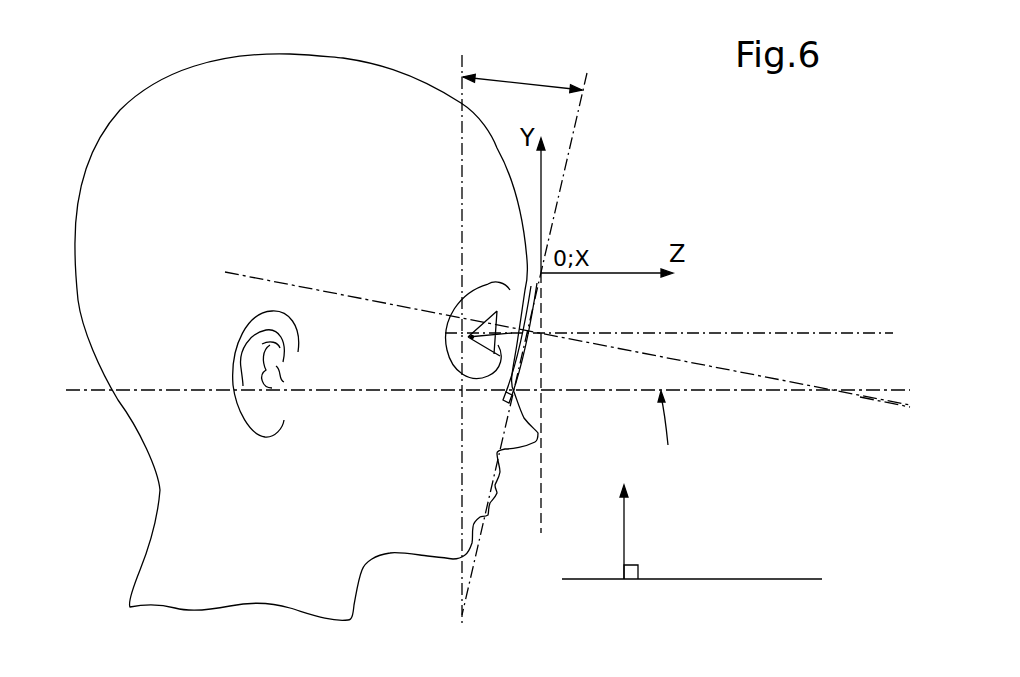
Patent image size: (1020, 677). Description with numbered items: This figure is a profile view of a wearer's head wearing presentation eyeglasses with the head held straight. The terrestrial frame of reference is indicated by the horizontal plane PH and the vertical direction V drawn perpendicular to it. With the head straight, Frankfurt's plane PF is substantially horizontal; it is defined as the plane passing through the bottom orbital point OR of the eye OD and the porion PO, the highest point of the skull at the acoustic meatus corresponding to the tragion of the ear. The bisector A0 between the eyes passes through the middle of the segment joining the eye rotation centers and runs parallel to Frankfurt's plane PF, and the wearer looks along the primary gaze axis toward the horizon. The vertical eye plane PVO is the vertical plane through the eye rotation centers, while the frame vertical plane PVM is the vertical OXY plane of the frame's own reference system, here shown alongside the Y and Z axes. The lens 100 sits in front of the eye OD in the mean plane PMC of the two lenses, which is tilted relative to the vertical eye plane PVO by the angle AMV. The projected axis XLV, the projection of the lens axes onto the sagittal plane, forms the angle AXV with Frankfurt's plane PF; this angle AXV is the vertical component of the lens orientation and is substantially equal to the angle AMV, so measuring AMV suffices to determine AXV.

The vertical eye plane PVO is at (460, 137).
The angle AMV is at (531, 73).
The mean plane of the two lenses PMC is at (580, 115).
The right eye OD is at (465, 330).
The porion PO is at (258, 362).
The lens 100 is at (541, 333).
The angle AXV is at (668, 352).
The bisector between the eyes A0 is at (850, 333).
The bottom orbital point OR is at (472, 380).
The Frankfurt's plane PF is at (757, 391).
The projected axis XLV is at (878, 402).
The frame vertical plane PVM is at (540, 520).
The horizontal plane PH is at (702, 580).
The vertical direction V is at (614, 463).